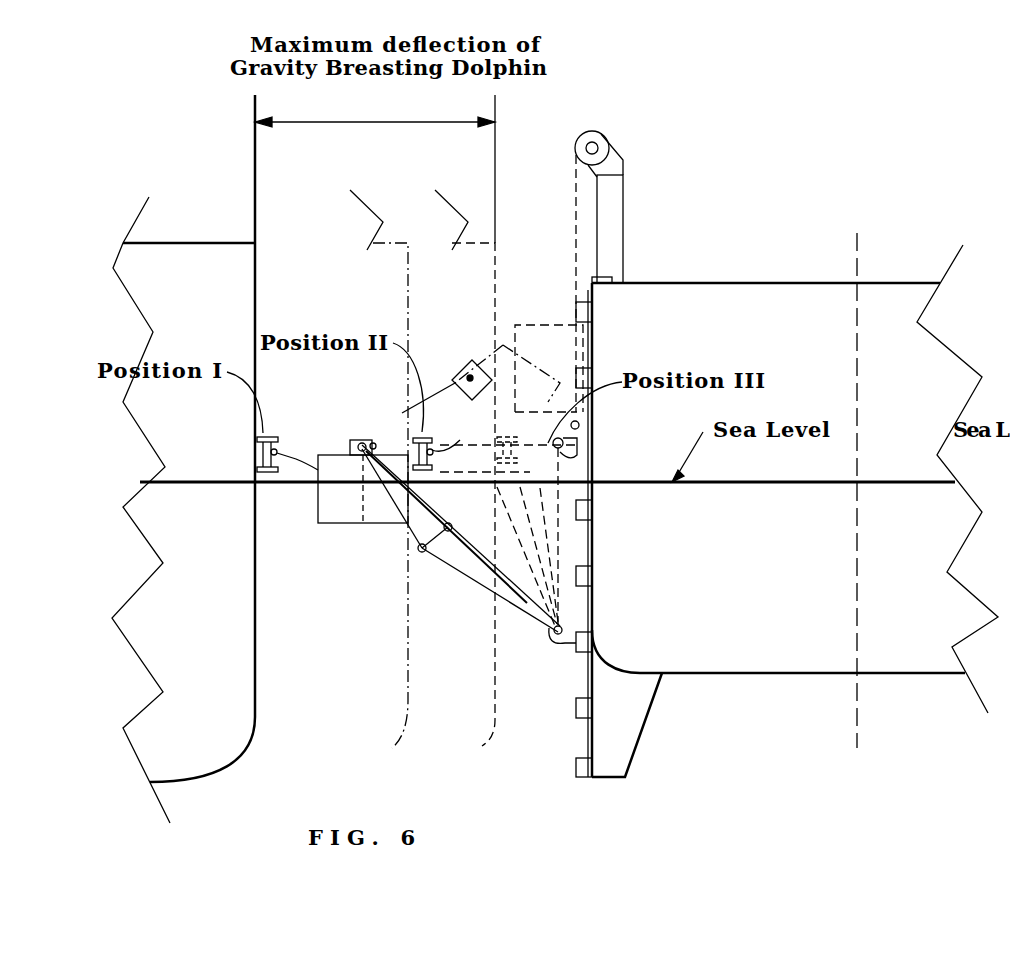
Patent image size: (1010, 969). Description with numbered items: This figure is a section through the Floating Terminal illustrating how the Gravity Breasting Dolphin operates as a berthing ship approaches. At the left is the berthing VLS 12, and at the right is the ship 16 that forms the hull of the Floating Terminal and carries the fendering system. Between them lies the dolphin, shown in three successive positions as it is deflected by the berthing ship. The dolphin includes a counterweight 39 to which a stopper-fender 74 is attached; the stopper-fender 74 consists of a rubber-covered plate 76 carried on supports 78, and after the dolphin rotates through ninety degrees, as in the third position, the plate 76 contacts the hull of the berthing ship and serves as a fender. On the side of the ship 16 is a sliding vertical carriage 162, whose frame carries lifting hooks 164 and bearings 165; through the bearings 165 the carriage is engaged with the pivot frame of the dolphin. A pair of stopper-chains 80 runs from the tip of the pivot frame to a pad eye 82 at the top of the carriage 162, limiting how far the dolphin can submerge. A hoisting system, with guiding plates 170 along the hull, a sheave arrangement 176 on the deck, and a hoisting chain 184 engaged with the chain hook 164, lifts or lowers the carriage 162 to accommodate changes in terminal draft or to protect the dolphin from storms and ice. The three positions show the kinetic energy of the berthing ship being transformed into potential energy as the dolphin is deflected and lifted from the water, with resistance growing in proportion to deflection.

The VLS 12 is at (236, 243).
The ship 16 is at (732, 283).
The counterweight 39 is at (382, 513).
The stopper-fender 74 is at (279, 430).
The plate 76 is at (364, 440).
The supports 78 is at (398, 432).
The stopper-chains 80 is at (470, 397).
The pad eye 82 is at (572, 449).
The sliding vertical carriage 162 is at (582, 613).
The lifting hooks 164 is at (580, 425).
The bearings 165 is at (568, 640).
The guiding plates 170 is at (587, 770).
The sheave arrangement 176 is at (612, 168).
The hoisting chain 184 is at (576, 208).